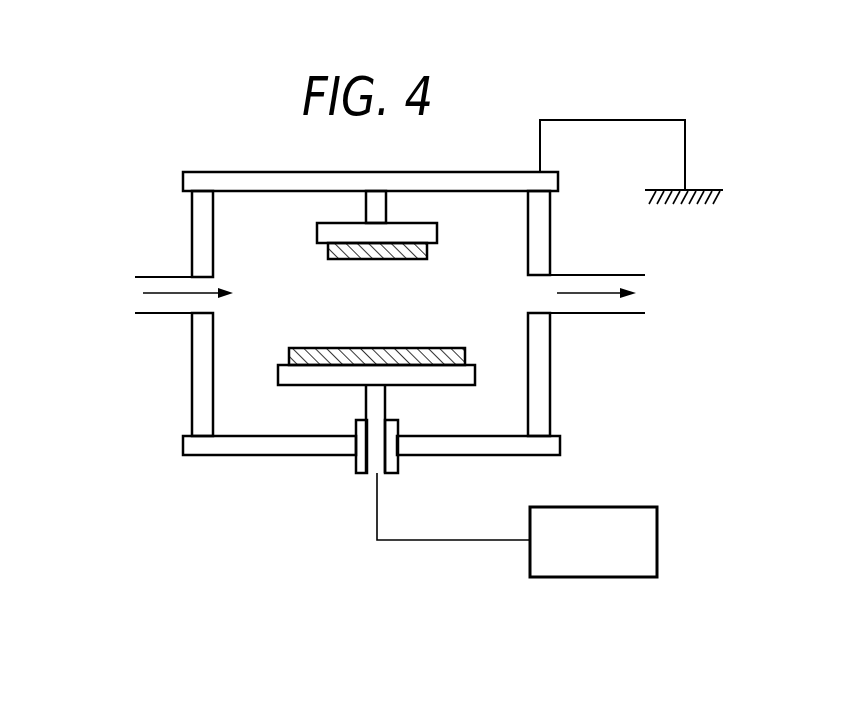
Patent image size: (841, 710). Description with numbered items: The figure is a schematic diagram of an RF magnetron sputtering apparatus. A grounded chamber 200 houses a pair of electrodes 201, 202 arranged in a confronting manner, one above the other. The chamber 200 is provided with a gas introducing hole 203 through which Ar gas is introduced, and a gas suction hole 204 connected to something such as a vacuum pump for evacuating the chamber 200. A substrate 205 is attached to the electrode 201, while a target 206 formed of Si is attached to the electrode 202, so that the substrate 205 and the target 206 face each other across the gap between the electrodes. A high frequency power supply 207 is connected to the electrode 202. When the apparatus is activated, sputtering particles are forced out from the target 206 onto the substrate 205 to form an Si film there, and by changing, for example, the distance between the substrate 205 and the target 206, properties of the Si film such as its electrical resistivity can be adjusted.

The chamber 200 is at (542, 389).
The electrode 201 is at (413, 228).
The electrode 202 is at (453, 380).
The gas introducing hole 203 is at (163, 313).
The gas suction hole 204 is at (573, 283).
The substrate 205 is at (327, 253).
The target 206 is at (315, 350).
The high frequency power supply 207 is at (600, 515).